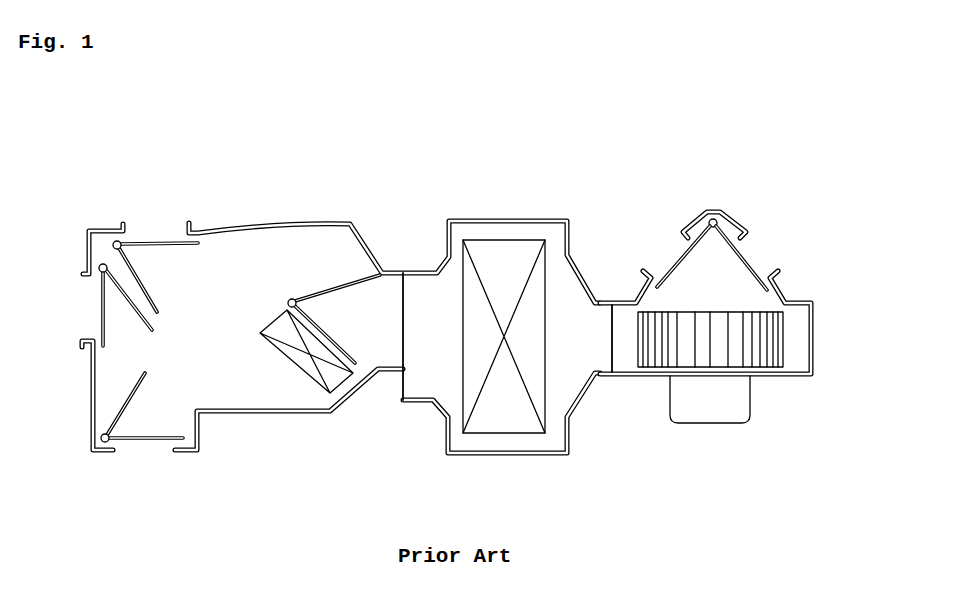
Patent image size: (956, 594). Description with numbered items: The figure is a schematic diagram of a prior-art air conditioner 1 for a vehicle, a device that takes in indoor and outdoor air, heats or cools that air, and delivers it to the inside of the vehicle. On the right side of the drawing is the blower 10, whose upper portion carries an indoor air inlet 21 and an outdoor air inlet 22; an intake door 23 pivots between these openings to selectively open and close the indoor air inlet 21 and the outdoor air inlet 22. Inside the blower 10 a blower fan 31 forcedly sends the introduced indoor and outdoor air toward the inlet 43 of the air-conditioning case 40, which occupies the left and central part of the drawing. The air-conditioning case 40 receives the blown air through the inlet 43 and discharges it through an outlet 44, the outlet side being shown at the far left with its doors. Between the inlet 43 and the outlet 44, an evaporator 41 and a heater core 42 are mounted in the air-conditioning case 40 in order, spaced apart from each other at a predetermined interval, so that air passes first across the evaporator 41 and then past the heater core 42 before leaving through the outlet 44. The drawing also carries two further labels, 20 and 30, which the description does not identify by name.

The air conditioner 1 is at (462, 293).
The blower 10 is at (734, 299).
The air inlet unit 20 is at (755, 246).
The indoor air inlet 21 is at (667, 257).
The outdoor air inlet 22 is at (750, 248).
The intake door 23 is at (750, 265).
The blower fan 30 is at (815, 363).
The blower fan 31 is at (721, 357).
The air-conditioning case 40 is at (306, 222).
The evaporator 41 is at (533, 357).
The heater core 42 is at (293, 360).
The inlet 43 is at (600, 317).
The outlet 44 is at (155, 232).